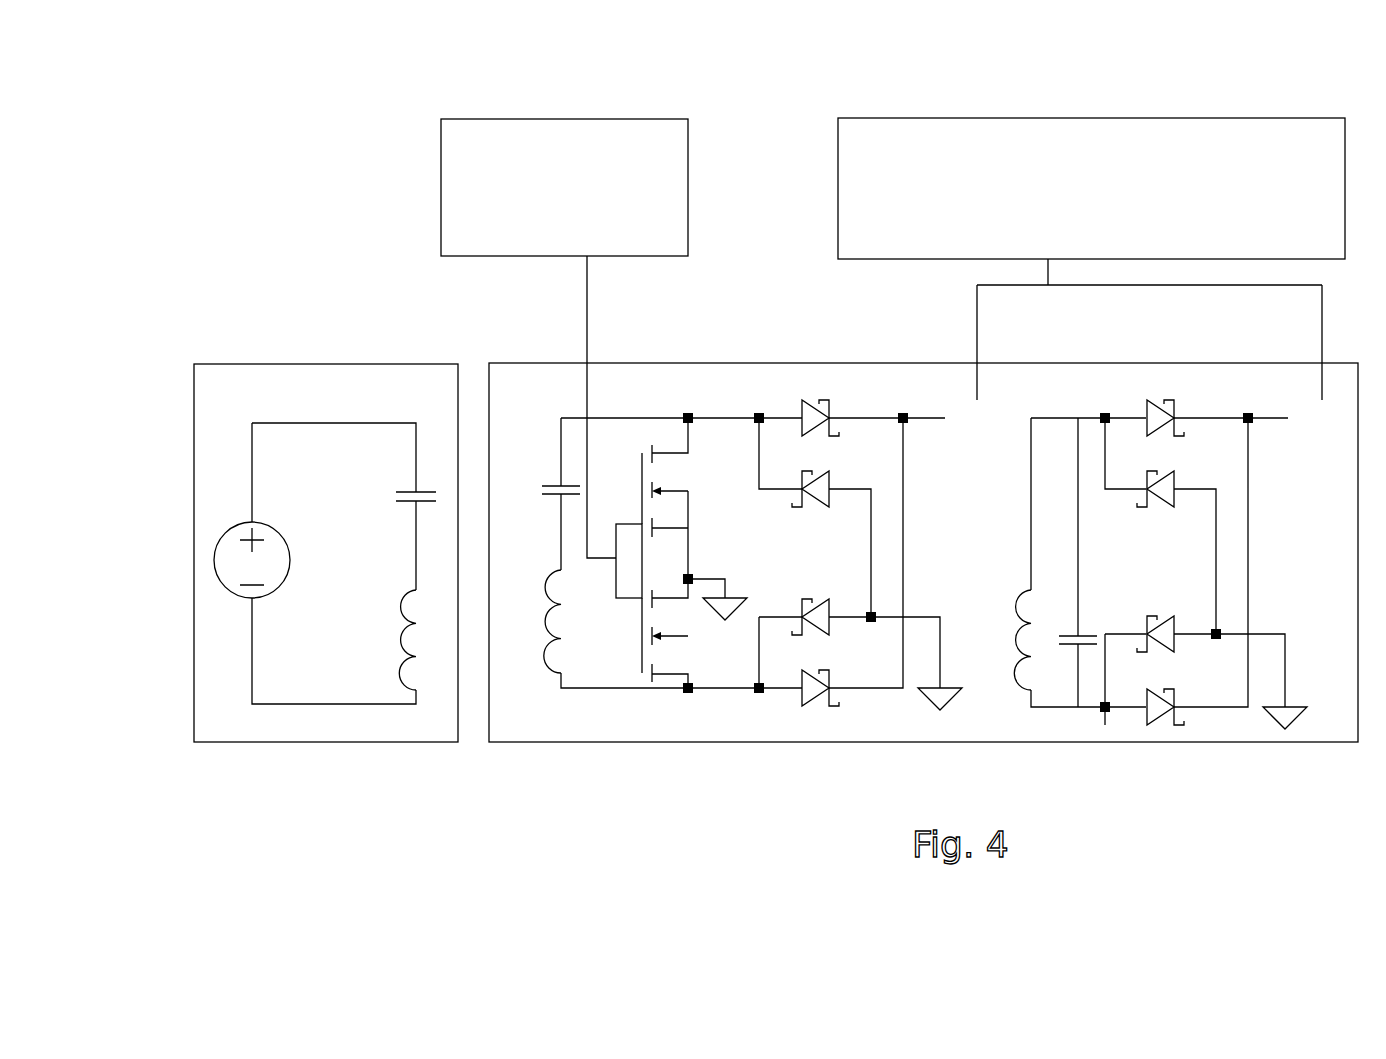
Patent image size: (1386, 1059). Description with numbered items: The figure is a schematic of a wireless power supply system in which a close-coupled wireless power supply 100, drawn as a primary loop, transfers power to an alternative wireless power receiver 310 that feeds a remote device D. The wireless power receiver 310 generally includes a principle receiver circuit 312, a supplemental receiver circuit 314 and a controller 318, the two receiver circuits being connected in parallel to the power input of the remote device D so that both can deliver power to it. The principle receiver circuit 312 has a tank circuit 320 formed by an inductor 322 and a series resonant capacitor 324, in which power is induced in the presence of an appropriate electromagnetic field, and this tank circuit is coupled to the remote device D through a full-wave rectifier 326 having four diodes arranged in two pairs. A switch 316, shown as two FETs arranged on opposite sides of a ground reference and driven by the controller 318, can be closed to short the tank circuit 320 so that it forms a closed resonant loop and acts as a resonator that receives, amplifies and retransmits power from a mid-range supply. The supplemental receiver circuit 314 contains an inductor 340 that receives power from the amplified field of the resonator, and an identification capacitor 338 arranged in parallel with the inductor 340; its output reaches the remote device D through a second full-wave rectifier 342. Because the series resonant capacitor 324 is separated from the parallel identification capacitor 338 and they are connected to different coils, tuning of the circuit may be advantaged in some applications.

The close-coupled wireless power supply 100 is at (359, 748).
The wireless power receiver 310 is at (818, 768).
The principle receiver circuit 312 is at (610, 601).
The supplemental receiver circuit 314 is at (1165, 557).
The switch 316 is at (626, 489).
The controller 318 is at (572, 119).
The tank circuit 320 is at (541, 558).
The inductor 322 is at (556, 648).
The series resonant capacitor 324 is at (540, 488).
The full-wave rectifier 326 is at (850, 396).
The identification capacitor 338 is at (1087, 636).
The inductor 340 is at (1019, 590).
The full-wave rectifier 342 is at (1196, 400).
The remote device D is at (1078, 118).